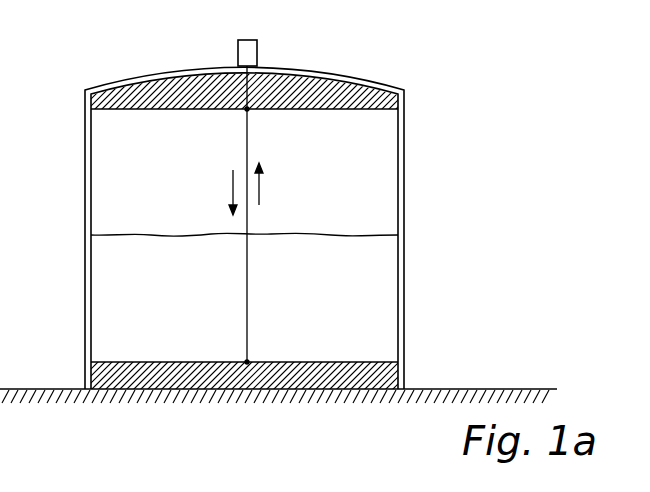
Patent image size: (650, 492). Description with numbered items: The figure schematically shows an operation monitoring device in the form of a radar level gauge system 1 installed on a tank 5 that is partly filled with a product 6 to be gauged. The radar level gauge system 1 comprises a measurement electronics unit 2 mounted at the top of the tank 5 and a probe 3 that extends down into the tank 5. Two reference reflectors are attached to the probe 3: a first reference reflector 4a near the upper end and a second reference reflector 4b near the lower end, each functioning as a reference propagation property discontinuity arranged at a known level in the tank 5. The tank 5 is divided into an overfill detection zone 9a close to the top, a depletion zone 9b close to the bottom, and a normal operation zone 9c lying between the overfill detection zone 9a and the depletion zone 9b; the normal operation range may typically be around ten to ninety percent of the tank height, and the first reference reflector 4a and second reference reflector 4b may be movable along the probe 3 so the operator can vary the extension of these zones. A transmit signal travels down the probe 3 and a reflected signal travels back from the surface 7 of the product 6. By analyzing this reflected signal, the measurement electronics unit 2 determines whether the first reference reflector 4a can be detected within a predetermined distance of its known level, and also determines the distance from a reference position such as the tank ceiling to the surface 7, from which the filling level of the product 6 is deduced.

The radar level gauge system 1 is at (247, 201).
The measurement electronics unit 2 is at (238, 52).
The probe 3 is at (249, 217).
The first reference reflector 4a is at (247, 110).
The second reference reflector 4b is at (248, 361).
The tank 5 is at (400, 157).
The product 6 is at (368, 283).
The surface 7 is at (385, 233).
The overfill detection zone 9a is at (80, 73).
The depletion zone 9b is at (80, 363).
The normal operation zone 9c is at (72, 113).